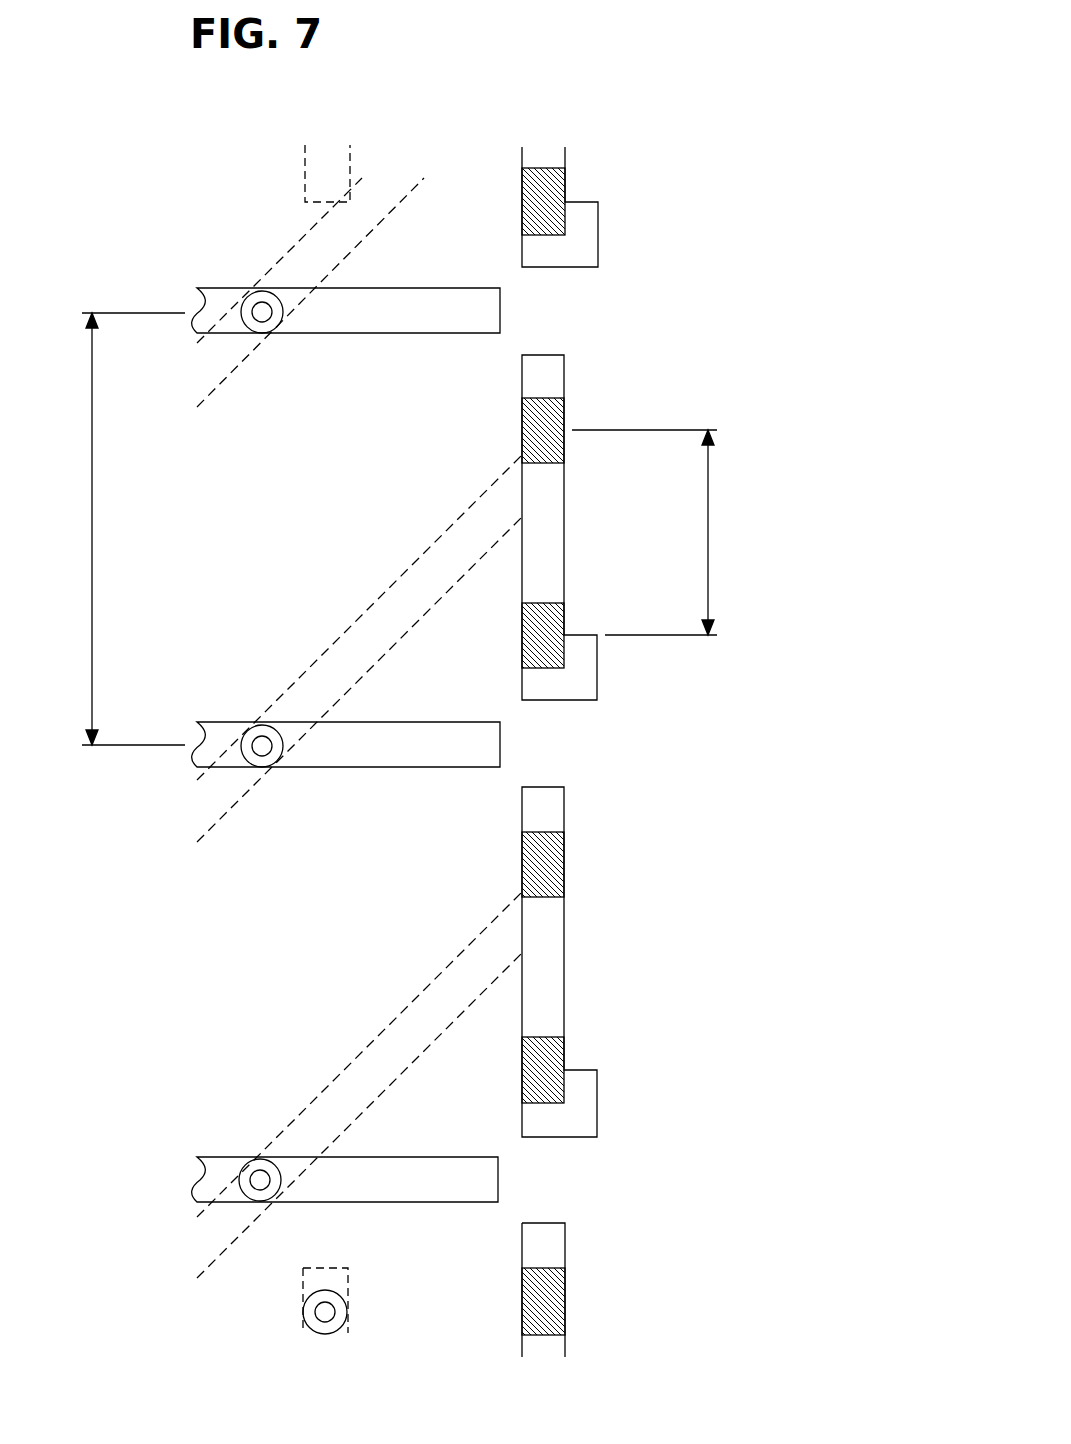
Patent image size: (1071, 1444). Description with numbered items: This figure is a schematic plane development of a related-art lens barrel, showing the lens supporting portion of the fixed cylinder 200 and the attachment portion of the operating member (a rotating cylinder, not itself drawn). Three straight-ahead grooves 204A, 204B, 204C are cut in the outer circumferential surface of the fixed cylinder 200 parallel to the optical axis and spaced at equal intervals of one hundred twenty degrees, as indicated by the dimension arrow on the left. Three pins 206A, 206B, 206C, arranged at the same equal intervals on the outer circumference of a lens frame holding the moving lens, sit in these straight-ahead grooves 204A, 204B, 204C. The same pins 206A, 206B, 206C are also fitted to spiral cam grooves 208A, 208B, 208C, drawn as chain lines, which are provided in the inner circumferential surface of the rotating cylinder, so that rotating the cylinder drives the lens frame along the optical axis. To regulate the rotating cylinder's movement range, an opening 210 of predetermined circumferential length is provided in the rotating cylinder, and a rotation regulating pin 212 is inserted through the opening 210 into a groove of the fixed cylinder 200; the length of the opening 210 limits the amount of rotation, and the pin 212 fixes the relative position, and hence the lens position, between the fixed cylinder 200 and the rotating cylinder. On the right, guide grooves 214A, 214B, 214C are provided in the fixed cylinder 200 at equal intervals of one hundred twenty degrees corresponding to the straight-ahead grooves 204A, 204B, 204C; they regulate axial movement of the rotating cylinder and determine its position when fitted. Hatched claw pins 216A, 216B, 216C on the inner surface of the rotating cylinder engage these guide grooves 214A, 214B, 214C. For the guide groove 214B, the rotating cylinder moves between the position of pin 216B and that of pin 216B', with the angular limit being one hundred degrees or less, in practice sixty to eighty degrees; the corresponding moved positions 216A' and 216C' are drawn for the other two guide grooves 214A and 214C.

The lens barrel (fixed cylinder) 200 is at (582, 78).
The straight-ahead groove 204A is at (218, 298).
The straight-ahead groove 204B is at (218, 733).
The straight-ahead groove 204C is at (218, 1167).
The pin 206A is at (263, 312).
The pin 206B is at (263, 746).
The pin 206C is at (261, 1180).
The spiral cam groove 208A is at (342, 247).
The spiral cam groove 208B is at (343, 680).
The spiral cam groove 208C is at (343, 1113).
The opening 210 is at (348, 1274).
The rotation regulating pin 212 is at (327, 1312).
The guide groove 214A is at (553, 160).
The guide groove 214B is at (553, 366).
The guide groove 214C is at (553, 800).
The pin (claw portion) 216A is at (603, 201).
The first magnet (opposite side) 216A' is at (604, 1297).
The pin (claw portion) 216B is at (589, 617).
The pin (moved position) 216B' is at (606, 420).
The pin (claw portion) 216C is at (588, 1051).
The third magnet (upper) 216C' is at (606, 854).